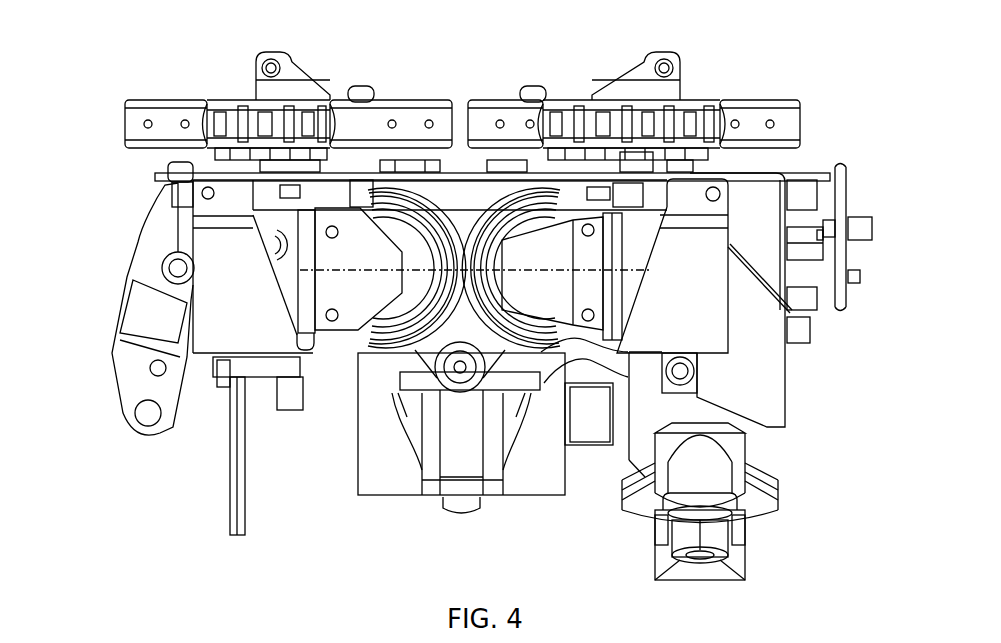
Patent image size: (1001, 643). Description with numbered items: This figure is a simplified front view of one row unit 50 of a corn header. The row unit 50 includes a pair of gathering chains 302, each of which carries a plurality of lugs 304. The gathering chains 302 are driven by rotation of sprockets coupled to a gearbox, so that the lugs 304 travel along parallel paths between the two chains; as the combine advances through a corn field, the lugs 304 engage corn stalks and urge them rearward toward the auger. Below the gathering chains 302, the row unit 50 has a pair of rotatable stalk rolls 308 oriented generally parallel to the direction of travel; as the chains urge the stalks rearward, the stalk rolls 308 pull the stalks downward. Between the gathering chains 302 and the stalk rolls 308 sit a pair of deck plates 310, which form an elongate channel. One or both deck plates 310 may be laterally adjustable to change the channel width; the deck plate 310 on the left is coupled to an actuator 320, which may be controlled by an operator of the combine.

The row unit 50 is at (513, 366).
The gathering chains 302 is at (690, 103).
The lugs 304 is at (125, 130).
The stalk rolls 308 is at (377, 340).
The deck plates 310 is at (363, 213).
The actuator 320 is at (150, 263).